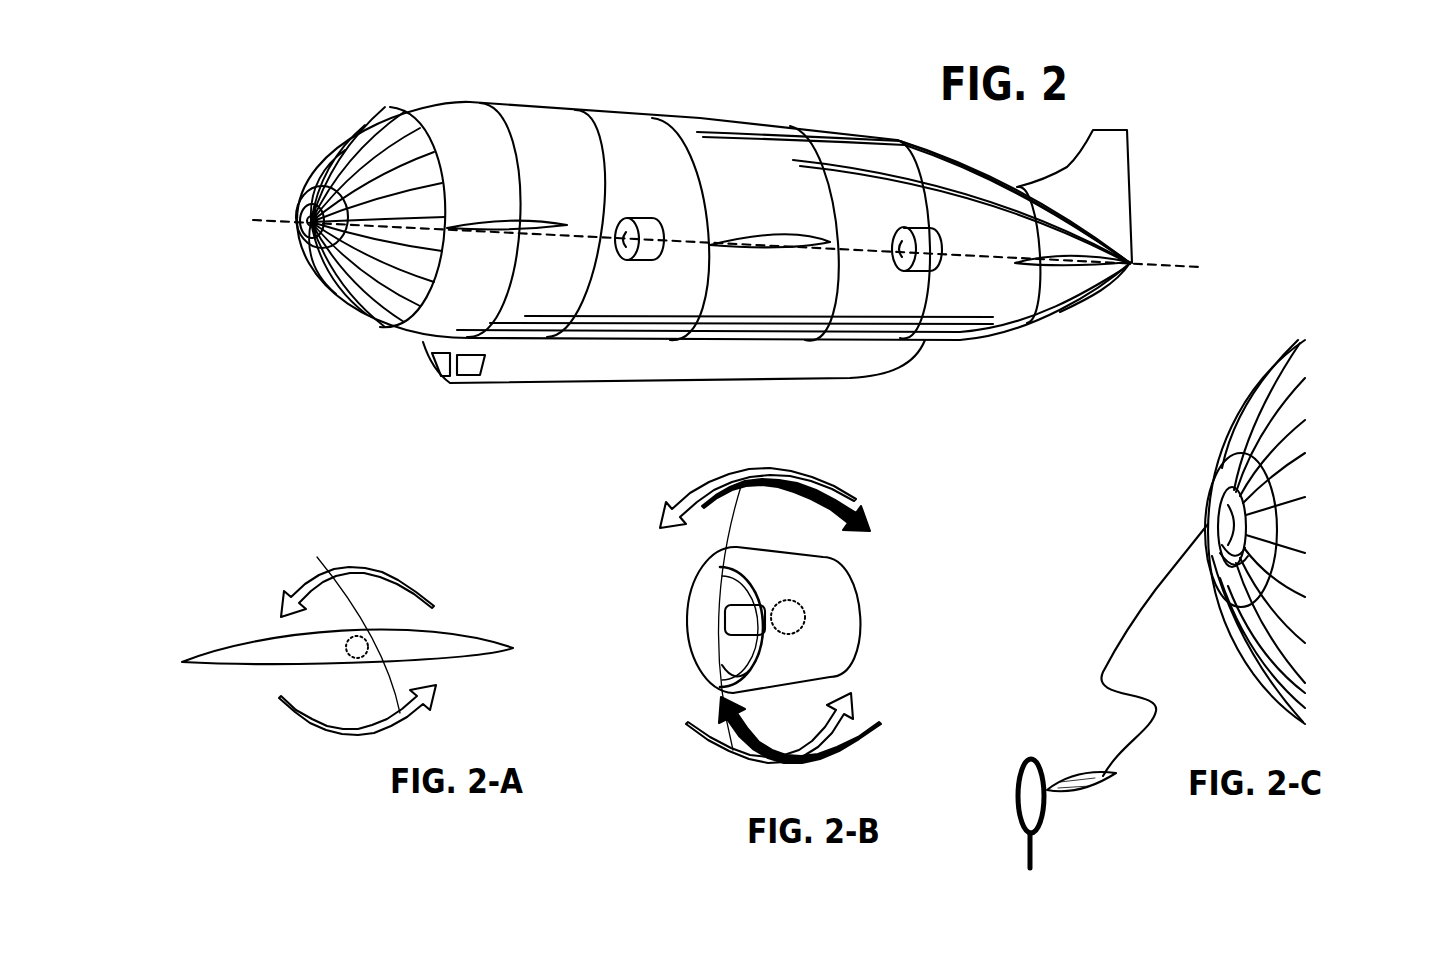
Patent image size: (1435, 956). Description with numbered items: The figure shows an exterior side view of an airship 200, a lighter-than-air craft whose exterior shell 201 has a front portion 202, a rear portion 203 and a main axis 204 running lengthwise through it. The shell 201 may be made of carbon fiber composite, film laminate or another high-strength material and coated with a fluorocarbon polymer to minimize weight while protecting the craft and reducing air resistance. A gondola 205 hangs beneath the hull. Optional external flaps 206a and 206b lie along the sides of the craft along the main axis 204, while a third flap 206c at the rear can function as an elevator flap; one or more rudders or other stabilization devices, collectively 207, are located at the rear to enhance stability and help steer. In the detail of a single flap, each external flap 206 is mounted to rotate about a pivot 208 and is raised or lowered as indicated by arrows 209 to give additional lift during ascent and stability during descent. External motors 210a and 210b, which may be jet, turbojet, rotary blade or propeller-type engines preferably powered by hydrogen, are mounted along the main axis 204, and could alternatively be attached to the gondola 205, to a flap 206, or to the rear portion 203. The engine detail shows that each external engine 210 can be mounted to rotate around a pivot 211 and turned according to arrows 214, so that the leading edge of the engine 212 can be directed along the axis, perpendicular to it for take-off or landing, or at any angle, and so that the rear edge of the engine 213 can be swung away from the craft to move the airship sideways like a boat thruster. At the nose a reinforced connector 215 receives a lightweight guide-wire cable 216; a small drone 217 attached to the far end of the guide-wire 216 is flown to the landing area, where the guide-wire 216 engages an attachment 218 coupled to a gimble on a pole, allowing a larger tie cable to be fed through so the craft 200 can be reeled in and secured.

In FIG. 2, the airship 200 is at (390, 82).
In FIG. 2, the exterior shell 201 is at (578, 108).
In FIG. 2-C, the exterior shell 201 is at (1257, 388).
In FIG. 2, the front portion 202 is at (330, 147).
In FIG. 2, the rear portion 203 is at (1115, 293).
In FIG. 2, the main axis 204 is at (1170, 268).
In FIG. 2, the gondola 205 is at (560, 387).
In FIG. 2-A, the external flap 206 is at (453, 590).
In FIG. 2, the external flap 206a is at (497, 233).
In FIG. 2, the external flap 206b is at (773, 248).
In FIG. 2, the external flap 206c is at (1085, 270).
In FIG. 2, the rudder 207 is at (1120, 178).
In FIG. 2-A, the pivot 208 is at (357, 660).
In FIG. 2-A, the arrows 209 is at (317, 580).
In FIG. 2-B, the external motor 210 is at (756, 633).
In FIG. 2, the external motor 210a is at (643, 217).
In FIG. 2, the external motor 210b is at (920, 223).
In FIG. 2-B, the pivot 211 is at (797, 632).
In FIG. 2-B, the leading edge of the engine 212 is at (693, 615).
In FIG. 2-B, the rear edge of the engine 213 is at (863, 613).
In FIG. 2-B, the arrows 214 is at (755, 755).
In FIG. 2, the reinforced connector 215 is at (298, 213).
In FIG. 2-C, the reinforced connector 215 is at (1213, 520).
In FIG. 2-C, the guide-wire cable 216 is at (1156, 582).
In FIG. 2-C, the drone 217 is at (1082, 783).
In FIG. 2-C, the attachment point 218 is at (1038, 768).